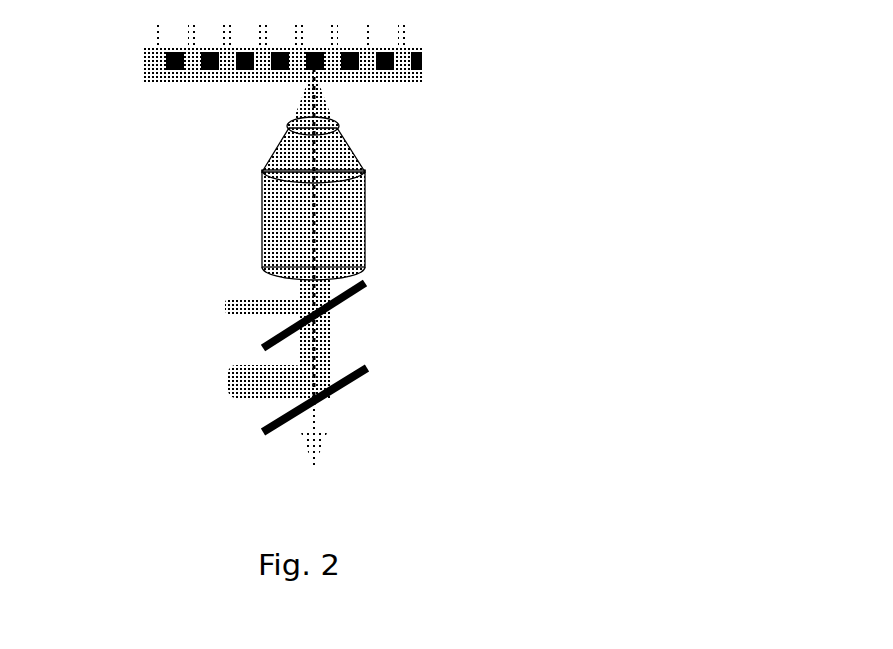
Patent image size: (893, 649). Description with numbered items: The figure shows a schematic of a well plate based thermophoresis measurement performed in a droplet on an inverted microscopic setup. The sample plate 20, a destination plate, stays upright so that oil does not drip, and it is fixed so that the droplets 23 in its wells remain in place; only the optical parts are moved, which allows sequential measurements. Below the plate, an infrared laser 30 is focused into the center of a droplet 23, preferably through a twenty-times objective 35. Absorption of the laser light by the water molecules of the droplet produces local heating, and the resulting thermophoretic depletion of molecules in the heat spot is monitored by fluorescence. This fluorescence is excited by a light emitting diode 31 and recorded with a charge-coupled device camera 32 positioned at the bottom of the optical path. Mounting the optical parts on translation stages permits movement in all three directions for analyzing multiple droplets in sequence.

The sample plate 20 is at (155, 72).
The droplets 23 is at (160, 57).
The objective 35 is at (337, 176).
The infrared (IR) laser 30 is at (175, 308).
The light emitting diode (LED) 31 is at (150, 381).
The charge-coupled device (CCD) camera 32 is at (358, 487).